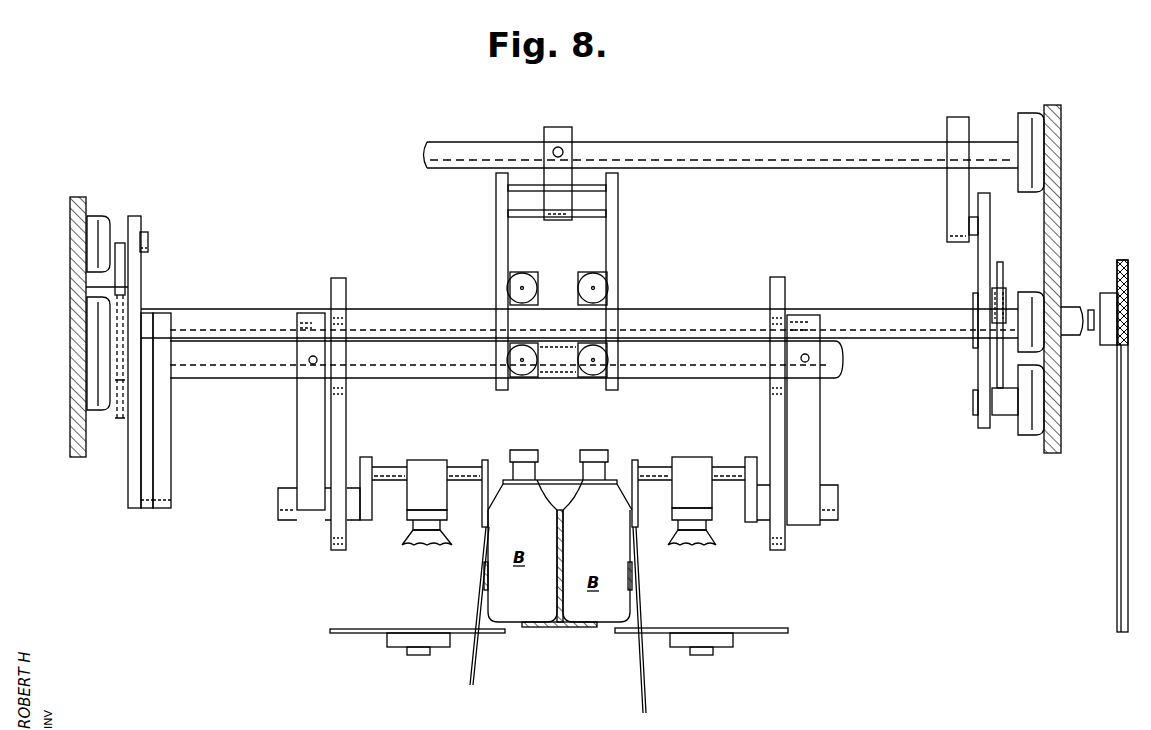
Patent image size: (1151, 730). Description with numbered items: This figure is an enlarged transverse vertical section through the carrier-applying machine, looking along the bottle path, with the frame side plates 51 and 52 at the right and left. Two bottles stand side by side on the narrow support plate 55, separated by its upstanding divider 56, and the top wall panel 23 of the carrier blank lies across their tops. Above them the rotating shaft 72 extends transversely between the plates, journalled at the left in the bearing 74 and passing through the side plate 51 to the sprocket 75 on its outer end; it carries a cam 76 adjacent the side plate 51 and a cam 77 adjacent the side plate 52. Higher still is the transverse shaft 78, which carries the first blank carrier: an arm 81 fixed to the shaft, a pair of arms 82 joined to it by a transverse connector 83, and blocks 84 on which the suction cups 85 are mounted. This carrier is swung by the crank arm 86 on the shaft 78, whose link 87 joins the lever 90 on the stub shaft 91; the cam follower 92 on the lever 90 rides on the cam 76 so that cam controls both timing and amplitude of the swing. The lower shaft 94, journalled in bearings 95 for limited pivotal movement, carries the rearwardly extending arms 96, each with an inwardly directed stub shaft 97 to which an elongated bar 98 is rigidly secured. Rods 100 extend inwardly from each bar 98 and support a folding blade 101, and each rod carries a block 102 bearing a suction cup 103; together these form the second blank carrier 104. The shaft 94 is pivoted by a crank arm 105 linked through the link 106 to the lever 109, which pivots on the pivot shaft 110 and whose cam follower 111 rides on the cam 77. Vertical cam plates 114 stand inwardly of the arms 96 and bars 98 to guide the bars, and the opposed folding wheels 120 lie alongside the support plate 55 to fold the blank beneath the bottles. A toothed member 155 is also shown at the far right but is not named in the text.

The top wall panel 23 is at (556, 480).
The side plate 51 is at (1057, 228).
The side plate 52 is at (68, 217).
The support plate 55 is at (560, 623).
The divider 56 is at (562, 568).
The rotating shaft 72 is at (902, 311).
The bearing 74 is at (97, 308).
The sprocket 75 is at (1124, 262).
The cam 76 is at (999, 262).
The cam 77 is at (86, 287).
The transverse shaft 78 is at (485, 149).
The arm 81 is at (563, 126).
The arms 82 is at (608, 233).
The transverse connector 83 is at (525, 209).
The block 84 is at (593, 273).
The suction cups 85 is at (591, 288).
The crank arm 86 is at (960, 116).
The link 87 is at (973, 218).
The lever 90 is at (978, 262).
The stub shaft 91 is at (973, 402).
The cam follower 92 is at (1003, 290).
The shaft 94 is at (223, 377).
The bearings 95 is at (93, 365).
The arms 96 is at (300, 418).
The stub shaft 97 is at (290, 503).
The elongated bar 98 is at (363, 457).
The rods 100 is at (457, 470).
The folding blade 101 is at (487, 462).
The block 102 is at (408, 504).
The suction cup 103 is at (430, 534).
The second blank carrier 104 is at (430, 450).
The crank arm 105 is at (167, 482).
The link 106 is at (147, 472).
The lever 109 is at (135, 285).
The pivot shaft 110 is at (147, 248).
The cam follower 111 is at (127, 266).
The cam plates 114 is at (343, 300).
The folding wheels 120 is at (367, 630).
The rack 155 is at (1118, 446).